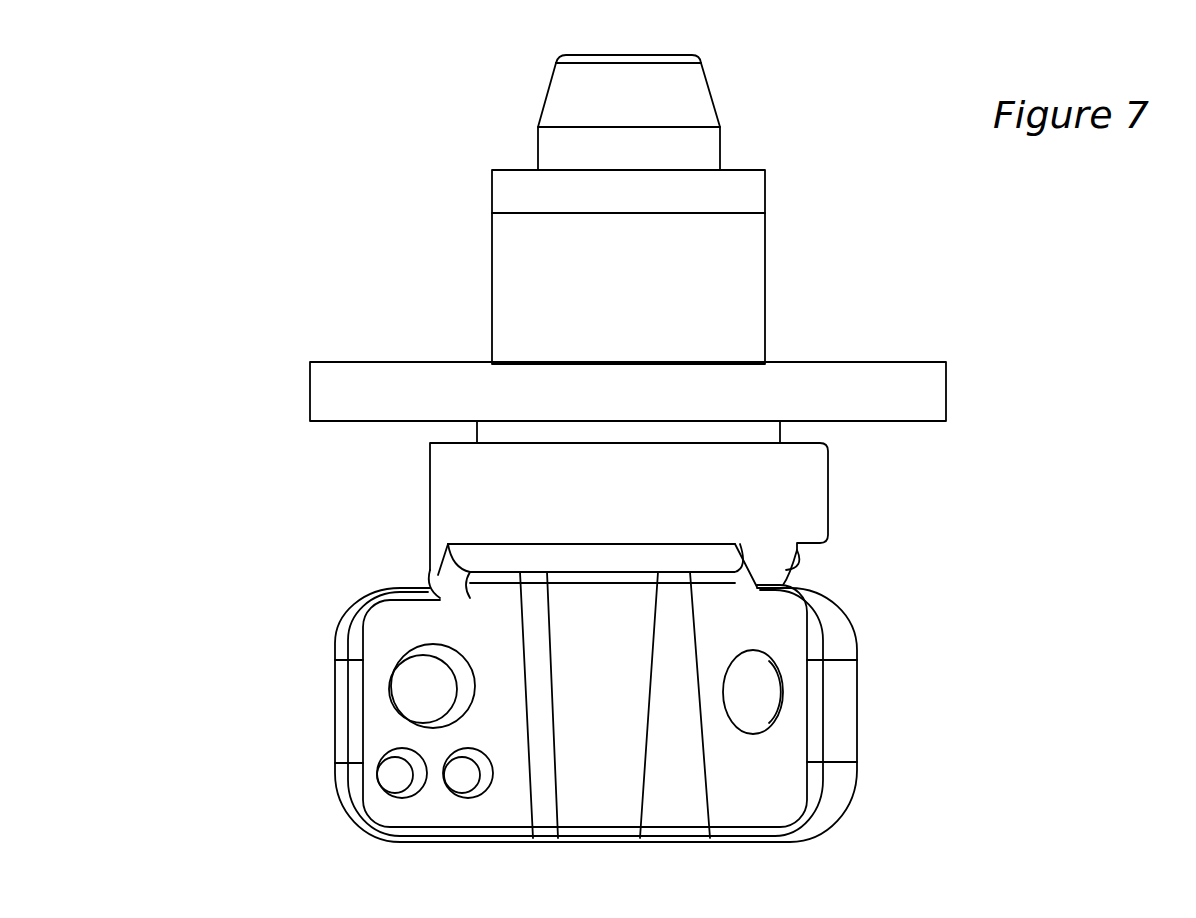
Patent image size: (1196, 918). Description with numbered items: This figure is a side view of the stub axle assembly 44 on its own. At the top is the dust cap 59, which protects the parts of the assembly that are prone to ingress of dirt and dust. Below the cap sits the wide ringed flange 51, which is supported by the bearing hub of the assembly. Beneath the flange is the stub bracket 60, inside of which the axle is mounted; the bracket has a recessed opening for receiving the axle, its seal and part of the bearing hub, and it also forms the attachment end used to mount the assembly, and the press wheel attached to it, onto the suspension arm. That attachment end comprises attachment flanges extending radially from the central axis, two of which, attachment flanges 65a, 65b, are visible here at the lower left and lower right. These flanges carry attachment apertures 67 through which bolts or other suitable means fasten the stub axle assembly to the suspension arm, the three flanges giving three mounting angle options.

The stub axle assembly 44 is at (393, 257).
The dust cap 59 is at (705, 109).
The ringed flange 51 is at (870, 380).
The stub bracket 60 is at (832, 505).
The attachment flange 65a is at (347, 713).
The attachment flange 65b is at (843, 723).
The attachment apertures 67 is at (757, 687).